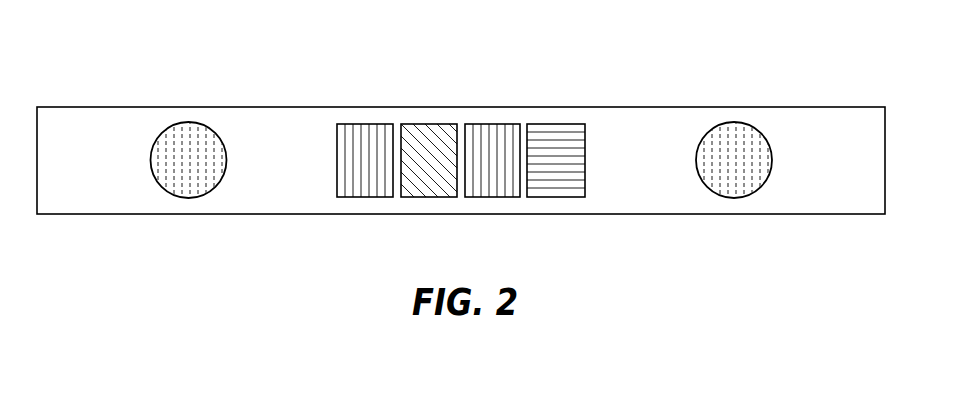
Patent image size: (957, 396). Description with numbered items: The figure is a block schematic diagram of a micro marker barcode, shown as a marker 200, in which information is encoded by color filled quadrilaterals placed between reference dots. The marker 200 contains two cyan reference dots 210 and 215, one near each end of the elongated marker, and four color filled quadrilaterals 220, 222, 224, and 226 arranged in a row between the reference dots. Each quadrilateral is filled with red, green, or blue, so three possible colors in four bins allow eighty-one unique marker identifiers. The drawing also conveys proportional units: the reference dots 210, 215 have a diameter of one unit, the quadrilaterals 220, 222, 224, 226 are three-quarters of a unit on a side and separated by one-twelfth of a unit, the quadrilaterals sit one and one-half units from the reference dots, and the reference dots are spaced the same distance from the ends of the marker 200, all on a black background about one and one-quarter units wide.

The marker 200 is at (783, 57).
The reference dot 210 is at (175, 178).
The reference dot 215 is at (745, 172).
The color filled quadrilateral 220 is at (367, 174).
The color filled quadrilateral 222 is at (432, 174).
The color filled quadrilateral 224 is at (493, 174).
The color filled quadrilateral 226 is at (558, 174).